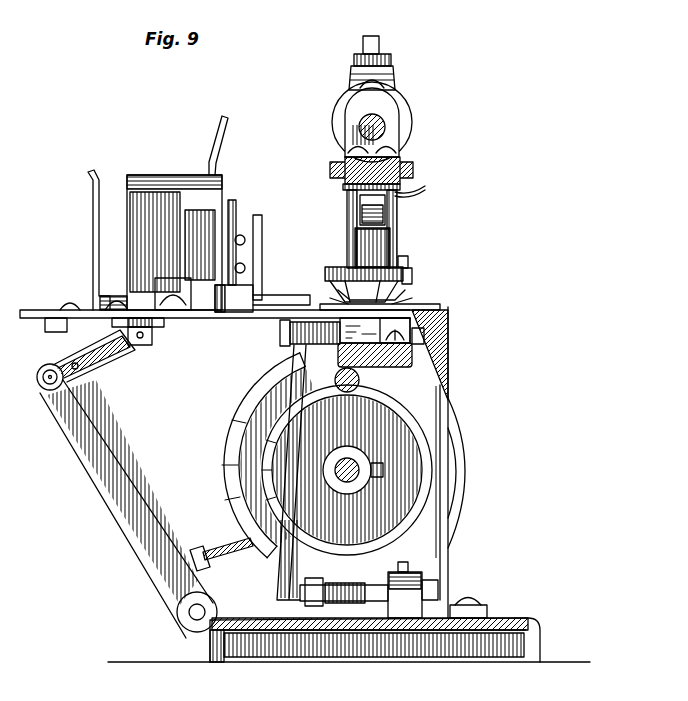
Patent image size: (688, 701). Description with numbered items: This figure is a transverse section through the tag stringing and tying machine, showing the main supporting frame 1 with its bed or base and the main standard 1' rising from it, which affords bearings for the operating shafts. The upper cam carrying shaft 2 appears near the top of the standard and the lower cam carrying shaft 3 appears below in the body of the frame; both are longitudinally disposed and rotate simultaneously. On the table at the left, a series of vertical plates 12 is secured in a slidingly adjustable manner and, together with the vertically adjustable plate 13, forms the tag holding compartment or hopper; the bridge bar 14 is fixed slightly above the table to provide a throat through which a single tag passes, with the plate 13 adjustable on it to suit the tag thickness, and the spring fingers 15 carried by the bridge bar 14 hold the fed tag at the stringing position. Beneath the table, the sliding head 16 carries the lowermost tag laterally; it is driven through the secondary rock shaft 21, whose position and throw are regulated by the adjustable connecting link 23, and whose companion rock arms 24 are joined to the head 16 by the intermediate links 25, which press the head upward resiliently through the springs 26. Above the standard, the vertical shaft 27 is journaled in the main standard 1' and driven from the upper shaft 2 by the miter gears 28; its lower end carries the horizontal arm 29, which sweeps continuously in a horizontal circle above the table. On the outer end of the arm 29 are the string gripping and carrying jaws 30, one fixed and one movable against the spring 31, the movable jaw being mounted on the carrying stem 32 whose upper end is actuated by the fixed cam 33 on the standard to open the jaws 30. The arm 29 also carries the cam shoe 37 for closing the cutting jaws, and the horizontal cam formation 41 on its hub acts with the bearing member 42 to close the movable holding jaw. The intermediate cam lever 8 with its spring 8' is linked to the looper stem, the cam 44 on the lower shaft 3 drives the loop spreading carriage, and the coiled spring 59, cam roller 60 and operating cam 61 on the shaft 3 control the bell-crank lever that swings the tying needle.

The main supporting frame 1 is at (384, 640).
The main standard 1' is at (358, 462).
The upper cam carrying shaft 2 is at (374, 116).
The lower cam carrying shaft 3 is at (344, 482).
The intermediate cam lever 8 is at (437, 585).
The spring 8' is at (344, 597).
The vertical plates 12 is at (143, 178).
The vertically adjustable plate 13 is at (216, 162).
The bridge bar 14 is at (230, 314).
The spring fingers 15 is at (290, 306).
The sliding head 16 is at (128, 331).
The secondary rock shaft 21 is at (194, 616).
The adjustable connecting link 23 is at (216, 560).
The rock arms 24 is at (108, 508).
The intermediate links 25 is at (102, 366).
The springs 26 is at (66, 382).
The vertical shaft 27 is at (380, 46).
The miter gears 28 is at (404, 160).
The horizontal arm 29 is at (372, 248).
The string gripping and carrying jaws 30 is at (345, 302).
The spring 31 is at (397, 222).
The carrying stem 32 is at (386, 207).
The fixed cam 33 is at (418, 190).
The cam shoe 37 is at (332, 270).
The horizontal cam formation 41 is at (413, 275).
The bearing member 42 is at (410, 262).
The cam 44 is at (235, 422).
The coiled spring 59 is at (285, 342).
The cam roller 60 is at (347, 456).
The operating cam 61 is at (268, 505).